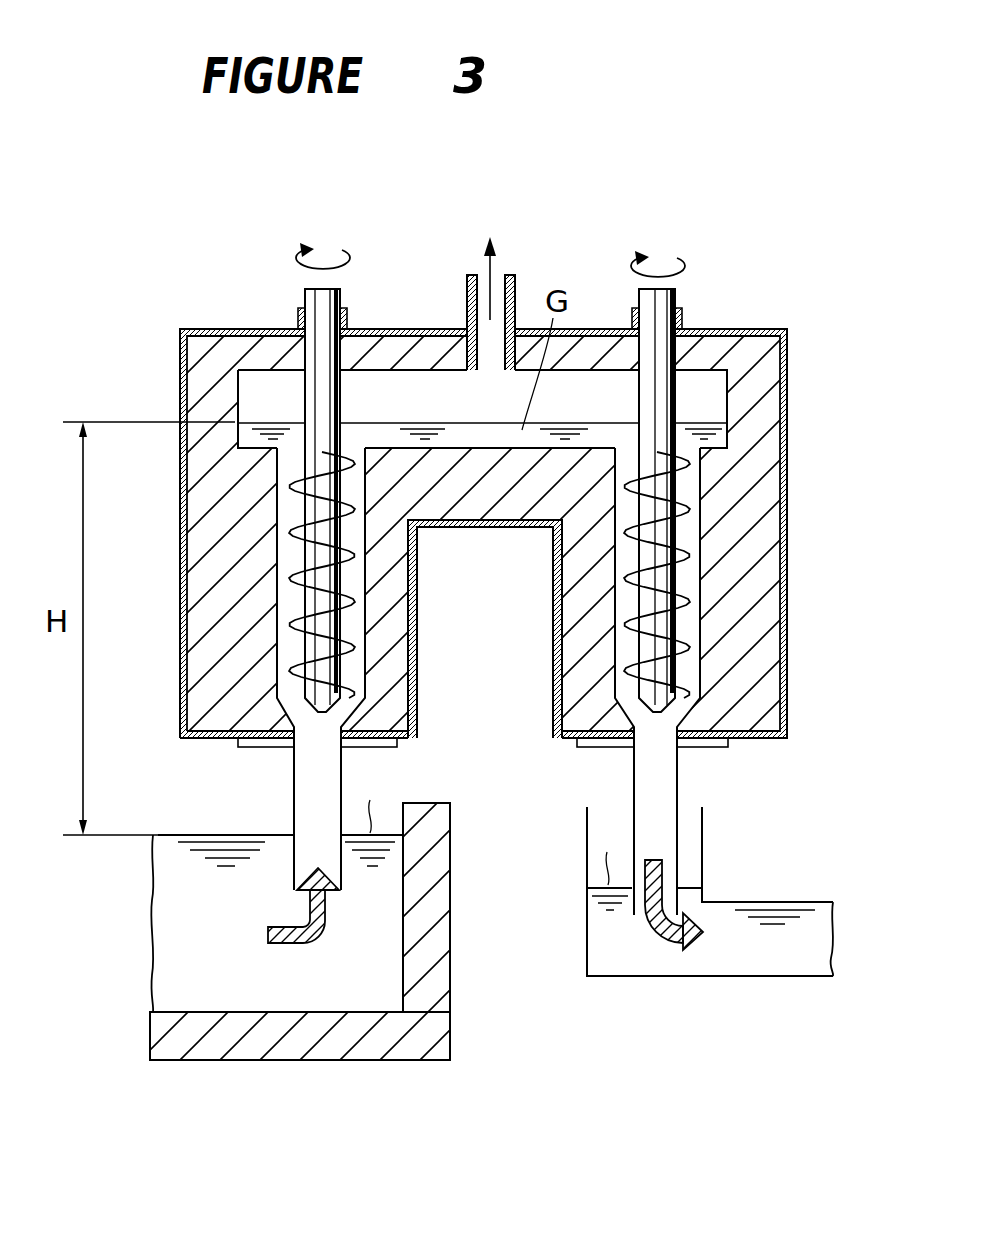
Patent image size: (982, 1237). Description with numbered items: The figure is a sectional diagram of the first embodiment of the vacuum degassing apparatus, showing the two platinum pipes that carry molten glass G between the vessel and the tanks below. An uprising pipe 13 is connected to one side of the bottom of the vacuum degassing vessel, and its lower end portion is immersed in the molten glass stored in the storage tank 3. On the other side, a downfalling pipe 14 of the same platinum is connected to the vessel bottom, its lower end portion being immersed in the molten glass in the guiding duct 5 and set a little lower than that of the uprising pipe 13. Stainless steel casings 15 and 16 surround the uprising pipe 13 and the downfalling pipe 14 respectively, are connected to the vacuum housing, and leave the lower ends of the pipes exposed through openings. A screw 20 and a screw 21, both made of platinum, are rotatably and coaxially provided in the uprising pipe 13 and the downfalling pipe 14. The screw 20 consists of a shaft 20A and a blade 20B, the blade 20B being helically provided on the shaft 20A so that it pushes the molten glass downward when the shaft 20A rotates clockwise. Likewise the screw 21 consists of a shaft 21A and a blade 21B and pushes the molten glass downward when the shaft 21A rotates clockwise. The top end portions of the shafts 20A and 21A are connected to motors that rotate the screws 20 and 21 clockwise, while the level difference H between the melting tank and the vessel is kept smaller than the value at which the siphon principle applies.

The storage tank 3 is at (430, 845).
The guiding duct 5 is at (638, 960).
The uprising pipe 13 is at (275, 590).
The downfalling pipe 14 is at (695, 596).
The casing 15 is at (181, 503).
The casing 16 is at (783, 460).
The screw 20 is at (303, 512).
The shaft 20A is at (303, 402).
The blade 20B is at (333, 490).
The screw 21 is at (675, 683).
The shaft 21A is at (675, 402).
The blade 21B is at (665, 478).